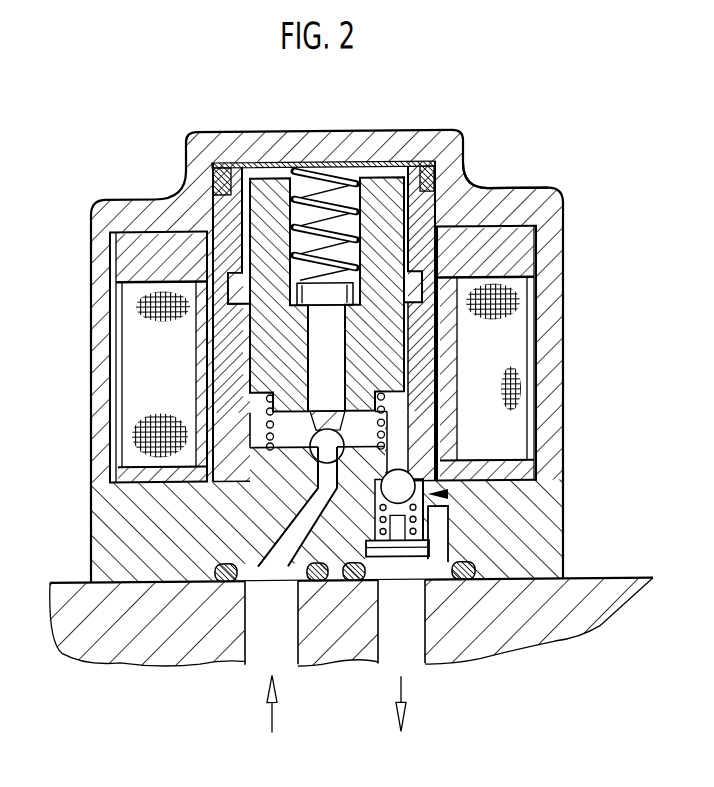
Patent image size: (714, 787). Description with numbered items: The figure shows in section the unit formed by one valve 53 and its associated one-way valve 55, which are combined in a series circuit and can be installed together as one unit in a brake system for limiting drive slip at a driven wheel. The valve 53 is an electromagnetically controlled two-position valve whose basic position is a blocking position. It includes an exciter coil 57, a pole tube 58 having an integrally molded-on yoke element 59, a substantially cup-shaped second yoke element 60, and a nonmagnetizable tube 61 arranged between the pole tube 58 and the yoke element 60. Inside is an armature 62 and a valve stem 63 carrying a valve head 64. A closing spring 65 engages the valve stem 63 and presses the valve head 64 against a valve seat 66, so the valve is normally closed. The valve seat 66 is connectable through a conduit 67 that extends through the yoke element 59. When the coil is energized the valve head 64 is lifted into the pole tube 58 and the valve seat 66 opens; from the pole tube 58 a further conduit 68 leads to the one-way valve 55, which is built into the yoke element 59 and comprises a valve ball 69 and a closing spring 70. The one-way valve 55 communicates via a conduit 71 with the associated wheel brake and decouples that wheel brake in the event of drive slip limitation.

The valve 53 is at (466, 111).
The one-way valve 55 is at (448, 495).
The exciter coil 57 is at (507, 311).
The pole tube 58 is at (421, 361).
The yoke element 59 is at (530, 550).
The second yoke element 60 is at (550, 259).
The nonmagnetizable tube 61 is at (442, 215).
The armature 62 is at (378, 190).
The valve stem 63 is at (339, 383).
The valve head 64 is at (313, 441).
The closing spring 65 is at (305, 166).
The valve seat 66 is at (344, 441).
The conduit 67 is at (301, 527).
The further conduit 68 is at (400, 461).
The valve ball 69 is at (409, 479).
The closing spring 70 is at (427, 560).
The conduit 71 is at (437, 529).